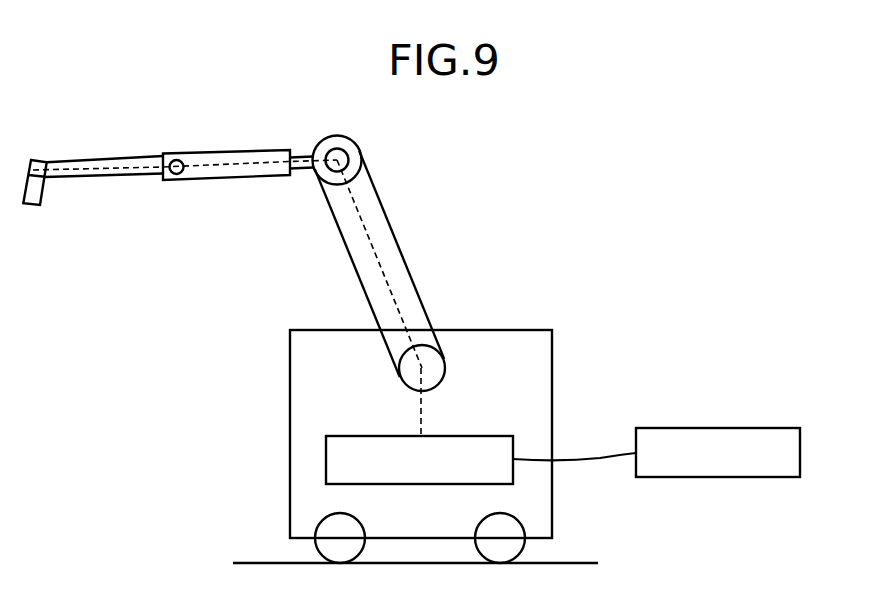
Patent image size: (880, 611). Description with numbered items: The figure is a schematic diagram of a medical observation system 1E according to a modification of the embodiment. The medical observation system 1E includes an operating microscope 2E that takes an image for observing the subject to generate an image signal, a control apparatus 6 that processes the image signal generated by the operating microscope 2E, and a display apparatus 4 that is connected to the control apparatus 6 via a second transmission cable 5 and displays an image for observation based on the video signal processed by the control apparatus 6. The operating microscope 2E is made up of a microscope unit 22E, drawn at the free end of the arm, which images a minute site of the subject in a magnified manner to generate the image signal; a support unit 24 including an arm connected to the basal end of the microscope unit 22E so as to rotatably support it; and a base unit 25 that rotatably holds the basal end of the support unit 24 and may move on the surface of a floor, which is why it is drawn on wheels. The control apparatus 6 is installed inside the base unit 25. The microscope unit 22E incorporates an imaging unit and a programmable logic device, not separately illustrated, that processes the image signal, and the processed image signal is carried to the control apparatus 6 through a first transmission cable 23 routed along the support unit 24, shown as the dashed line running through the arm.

The medical observation system 1E is at (573, 248).
The operating microscope 2E is at (377, 197).
The microscope unit 22E is at (33, 189).
The first transmission cable 23 is at (383, 258).
The support unit 24 is at (215, 175).
The base unit 25 is at (290, 459).
The control apparatus 6 is at (452, 418).
The second transmission cable 5 is at (598, 461).
The display apparatus 4 is at (800, 452).